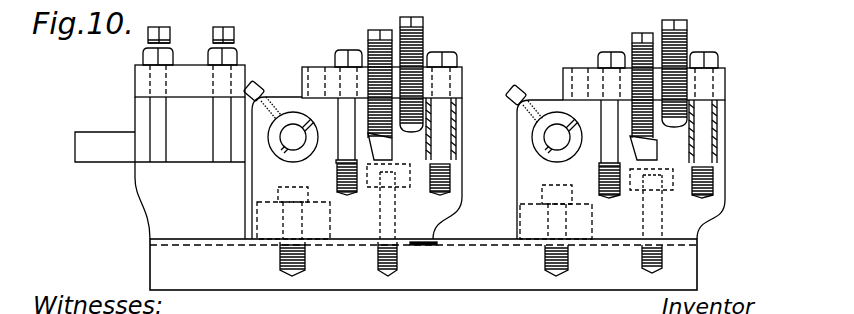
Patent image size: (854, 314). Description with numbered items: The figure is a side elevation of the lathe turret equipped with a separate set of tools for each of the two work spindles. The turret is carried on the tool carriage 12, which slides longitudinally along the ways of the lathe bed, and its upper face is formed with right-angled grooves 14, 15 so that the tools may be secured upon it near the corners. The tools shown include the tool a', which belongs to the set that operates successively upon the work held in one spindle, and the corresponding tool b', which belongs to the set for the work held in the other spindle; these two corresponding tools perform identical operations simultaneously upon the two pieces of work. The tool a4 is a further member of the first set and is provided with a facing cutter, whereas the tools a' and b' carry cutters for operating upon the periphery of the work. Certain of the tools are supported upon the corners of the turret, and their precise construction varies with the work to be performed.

The tool carriage 12 is at (468, 280).
The right-angled groove 14 is at (341, 249).
The right-angled groove 15 is at (280, 241).
The tool a4 is at (160, 133).
The tool b' is at (352, 131).
The tool a' is at (615, 129).